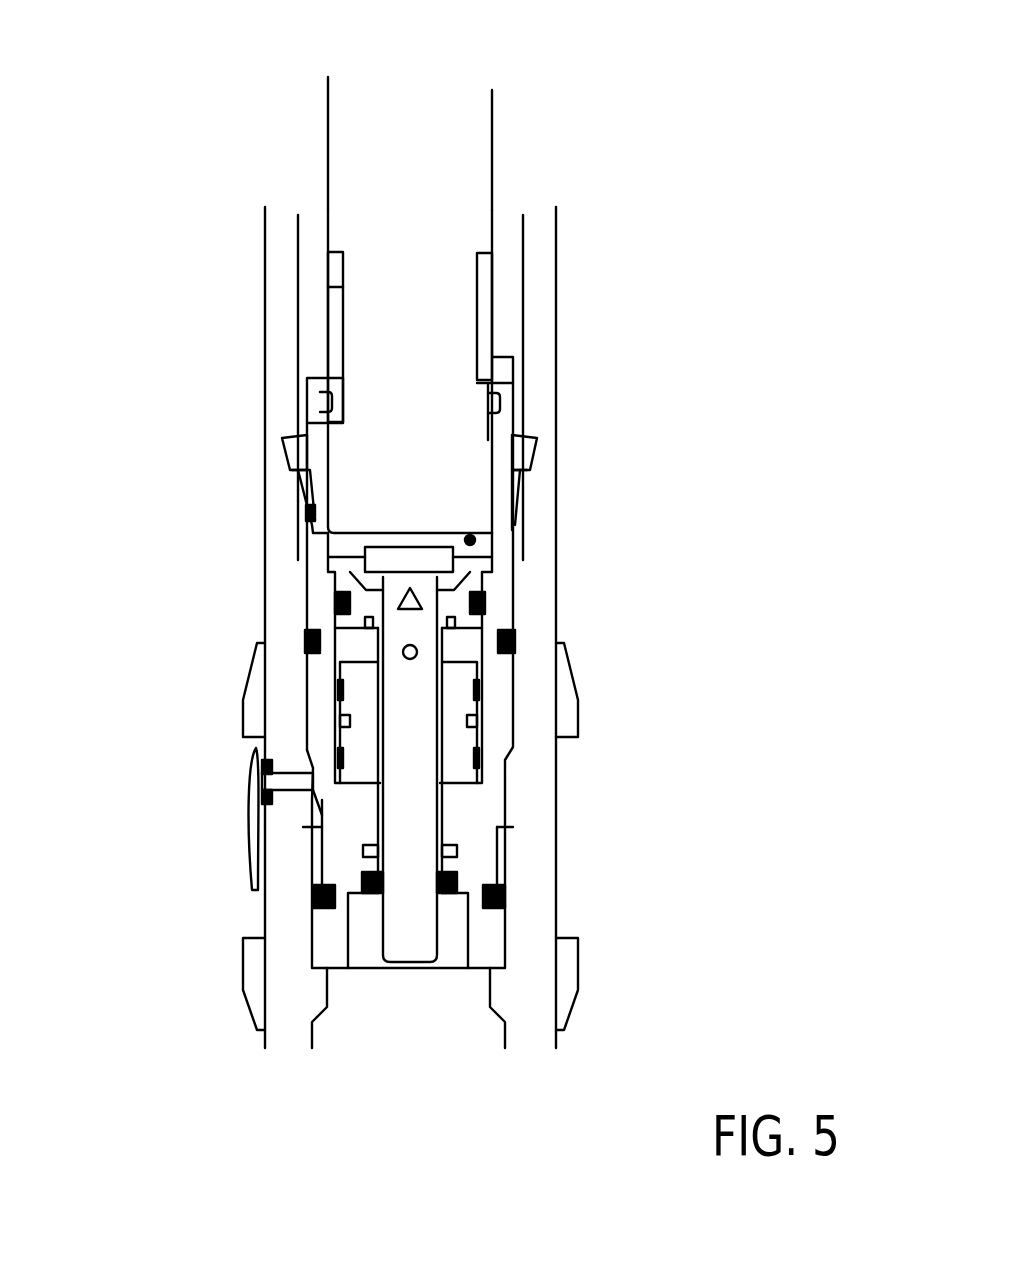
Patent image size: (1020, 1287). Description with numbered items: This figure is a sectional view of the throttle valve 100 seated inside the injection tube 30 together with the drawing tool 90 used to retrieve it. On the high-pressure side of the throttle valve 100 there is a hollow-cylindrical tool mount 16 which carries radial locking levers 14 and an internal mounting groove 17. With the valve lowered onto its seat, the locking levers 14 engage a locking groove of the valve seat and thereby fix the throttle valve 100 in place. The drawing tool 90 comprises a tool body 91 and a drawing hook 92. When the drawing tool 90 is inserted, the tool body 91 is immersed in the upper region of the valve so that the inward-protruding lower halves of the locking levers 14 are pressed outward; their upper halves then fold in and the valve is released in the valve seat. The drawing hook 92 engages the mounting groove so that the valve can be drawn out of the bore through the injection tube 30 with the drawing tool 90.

The drawing tool 90 is at (418, 48).
The tool body 91 is at (433, 137).
The injection tube 30 is at (550, 350).
The throttle valve 100 is at (208, 291).
The drawing hook 92 is at (327, 328).
The mounting groove 17 is at (495, 402).
The locking levers 14 is at (300, 447).
The tool mount 16 is at (478, 541).